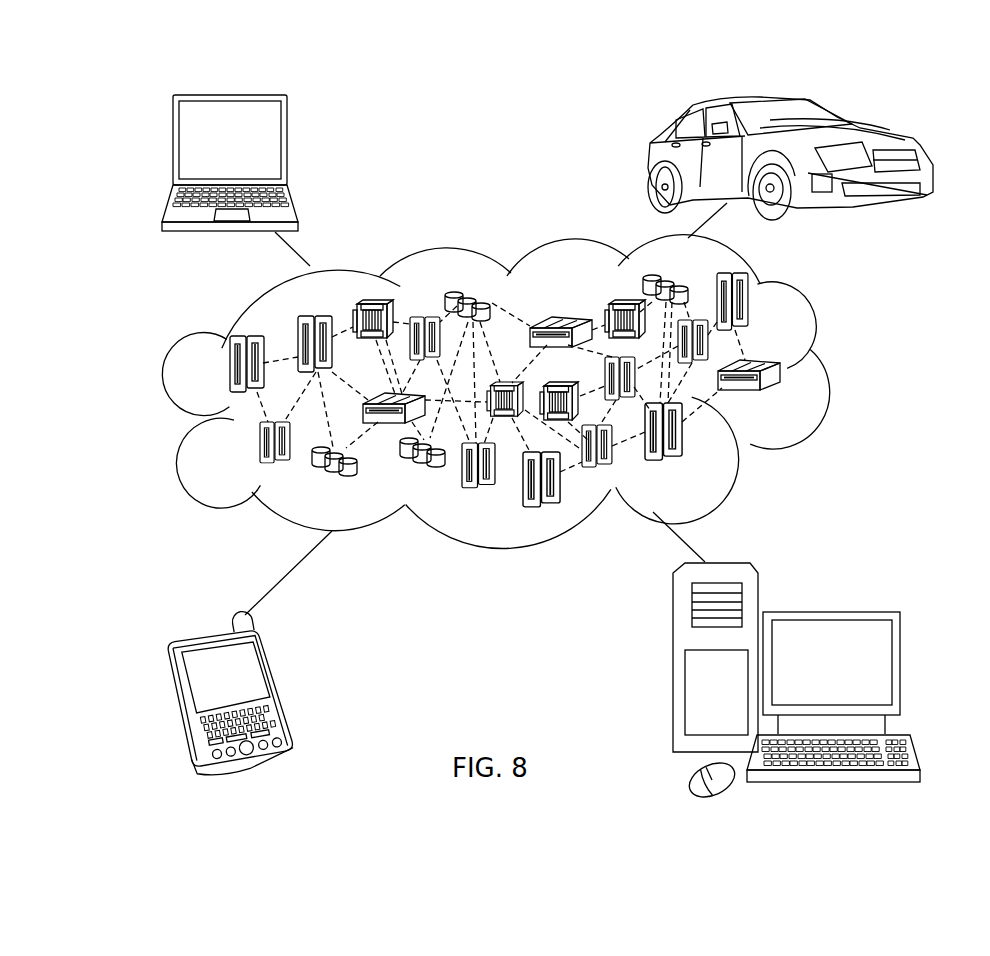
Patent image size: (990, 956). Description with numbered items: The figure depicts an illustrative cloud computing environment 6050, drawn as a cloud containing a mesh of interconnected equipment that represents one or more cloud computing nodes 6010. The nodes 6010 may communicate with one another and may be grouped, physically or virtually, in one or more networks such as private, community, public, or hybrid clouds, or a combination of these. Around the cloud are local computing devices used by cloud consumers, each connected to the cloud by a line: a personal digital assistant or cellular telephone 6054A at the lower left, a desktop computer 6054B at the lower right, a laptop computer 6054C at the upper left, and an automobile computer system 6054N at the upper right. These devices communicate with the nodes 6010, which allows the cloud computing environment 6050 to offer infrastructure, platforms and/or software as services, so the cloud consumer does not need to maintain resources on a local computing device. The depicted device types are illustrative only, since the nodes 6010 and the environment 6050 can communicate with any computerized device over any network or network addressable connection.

The laptop computer 6054C is at (288, 146).
The automobile computer system 6054N is at (652, 157).
The cloud computing environment 6050 is at (530, 392).
The cloud computing nodes 6010 is at (790, 398).
The personal digital assistant or cellular telephone 6054A is at (278, 685).
The desktop computer 6054B is at (830, 612).